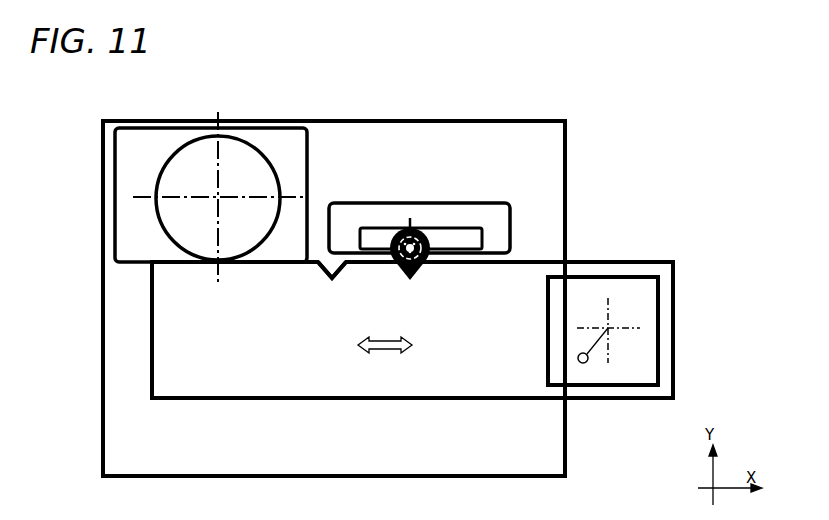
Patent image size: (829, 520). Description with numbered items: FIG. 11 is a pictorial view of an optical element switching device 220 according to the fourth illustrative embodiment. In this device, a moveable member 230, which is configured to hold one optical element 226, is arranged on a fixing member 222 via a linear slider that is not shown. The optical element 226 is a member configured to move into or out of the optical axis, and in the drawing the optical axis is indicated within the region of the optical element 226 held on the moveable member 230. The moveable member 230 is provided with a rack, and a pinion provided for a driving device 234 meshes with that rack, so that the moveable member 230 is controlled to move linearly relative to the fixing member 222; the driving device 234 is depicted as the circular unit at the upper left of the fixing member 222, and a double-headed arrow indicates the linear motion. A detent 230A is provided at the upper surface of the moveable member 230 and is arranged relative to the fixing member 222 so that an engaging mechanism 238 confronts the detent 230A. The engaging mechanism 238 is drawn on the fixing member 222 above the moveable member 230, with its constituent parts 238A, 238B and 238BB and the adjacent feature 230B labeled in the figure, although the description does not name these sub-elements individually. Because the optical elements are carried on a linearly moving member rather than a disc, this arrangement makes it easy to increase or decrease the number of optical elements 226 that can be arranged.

The optical element switching device 220 is at (600, 128).
The fixing member 222 is at (420, 135).
The optical element 226 is at (596, 309).
The moveable member 230 is at (622, 273).
The detent 230A is at (571, 260).
The notch 230B is at (323, 278).
The driving device 234 is at (234, 157).
The engaging mechanism 238 is at (435, 226).
The guide slot 238A is at (472, 213).
The positioning pin 238B is at (423, 268).
The pin head 238BB is at (402, 272).